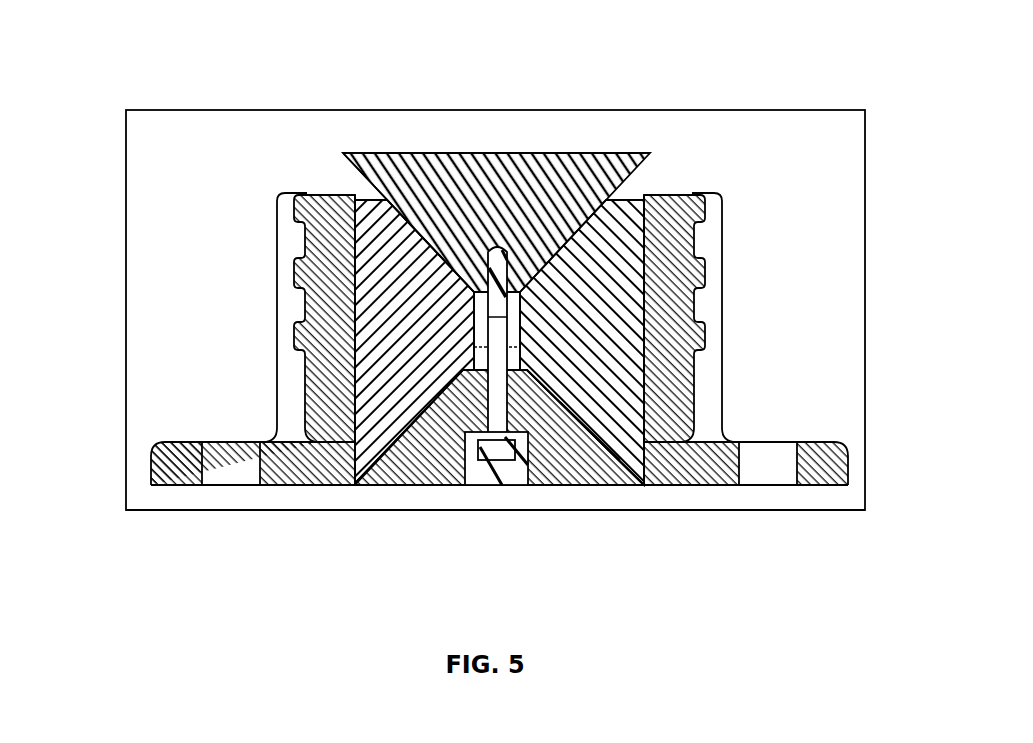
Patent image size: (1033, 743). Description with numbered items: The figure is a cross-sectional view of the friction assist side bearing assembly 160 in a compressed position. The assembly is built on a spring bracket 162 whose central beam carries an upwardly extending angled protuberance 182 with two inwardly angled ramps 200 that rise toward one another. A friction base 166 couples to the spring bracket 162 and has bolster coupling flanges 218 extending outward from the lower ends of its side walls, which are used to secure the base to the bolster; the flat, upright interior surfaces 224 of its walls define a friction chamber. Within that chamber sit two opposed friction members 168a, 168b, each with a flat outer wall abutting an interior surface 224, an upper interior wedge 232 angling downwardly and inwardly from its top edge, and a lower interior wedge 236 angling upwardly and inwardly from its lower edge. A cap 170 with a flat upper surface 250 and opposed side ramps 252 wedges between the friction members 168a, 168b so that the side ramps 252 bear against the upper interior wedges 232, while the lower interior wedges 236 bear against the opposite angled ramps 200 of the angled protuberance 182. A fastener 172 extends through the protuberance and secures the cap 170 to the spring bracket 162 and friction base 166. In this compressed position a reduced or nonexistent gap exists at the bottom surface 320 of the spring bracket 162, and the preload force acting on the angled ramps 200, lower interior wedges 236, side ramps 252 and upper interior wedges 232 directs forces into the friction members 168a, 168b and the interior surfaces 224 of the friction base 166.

The friction assist side bearing assembly 160 is at (225, 76).
The spring bracket 162 is at (443, 500).
The friction base 166 is at (692, 494).
The first friction member 168a is at (617, 248).
The second friction member 168b is at (367, 322).
The cap 170 is at (427, 145).
The fastener 172 is at (492, 486).
The angled protuberance 182 is at (588, 465).
The angled ramps 200 is at (396, 440).
The bolster coupling flanges 218 is at (165, 480).
The interior surfaces 224 is at (353, 293).
The upper interior wedge 232 is at (443, 252).
The lower interior wedge 236 is at (432, 403).
The flat upper surface 250 is at (617, 150).
The side ramps 252 is at (400, 218).
The bottom surface 320 is at (562, 486).